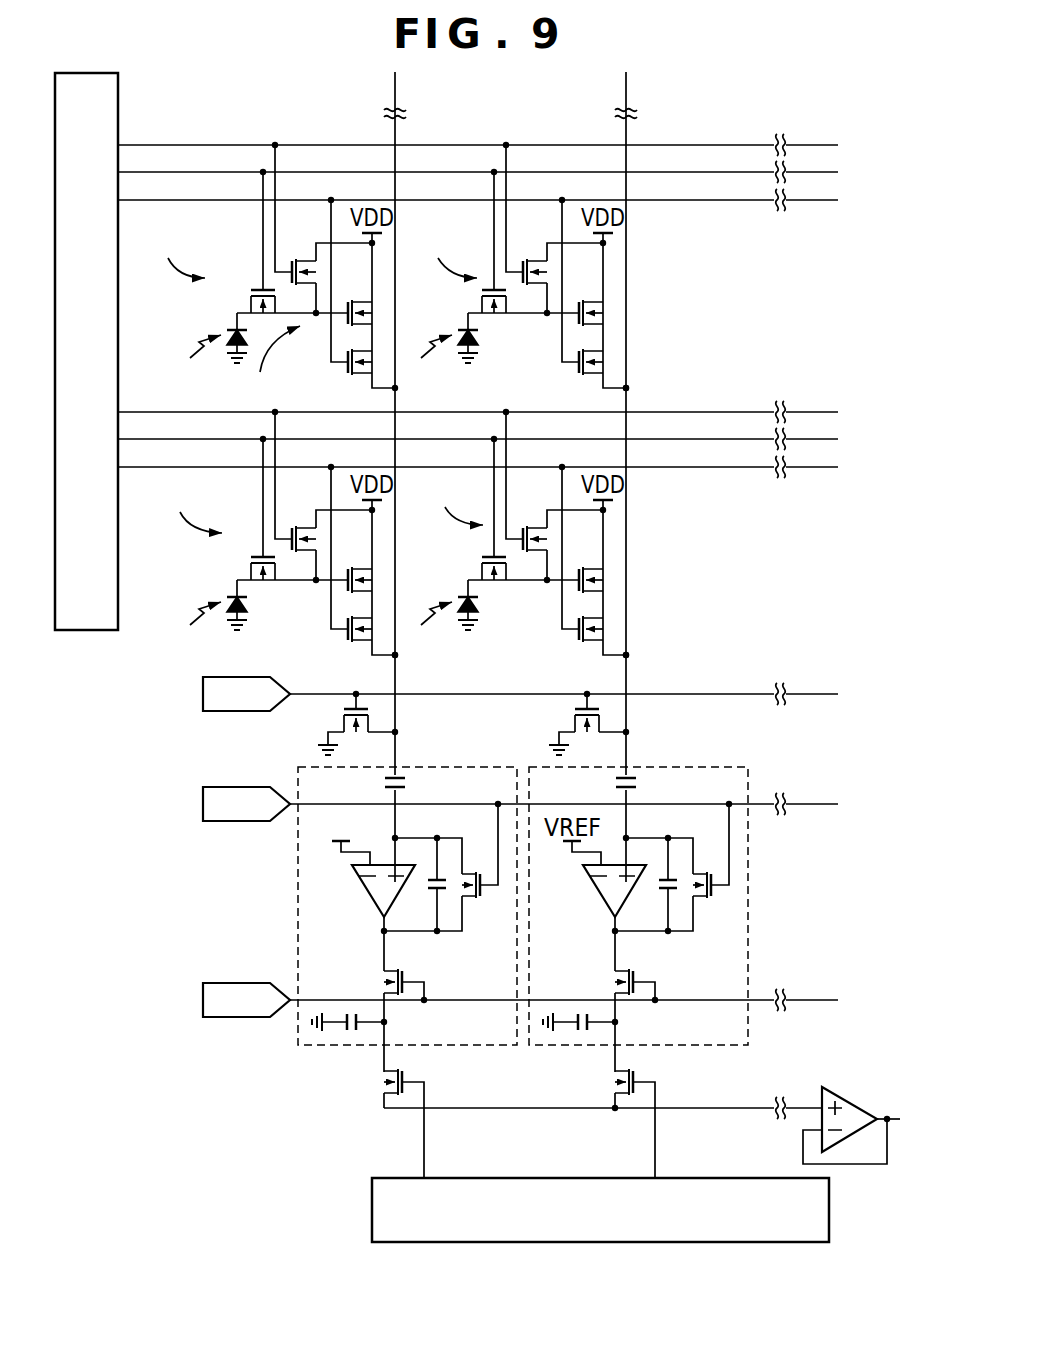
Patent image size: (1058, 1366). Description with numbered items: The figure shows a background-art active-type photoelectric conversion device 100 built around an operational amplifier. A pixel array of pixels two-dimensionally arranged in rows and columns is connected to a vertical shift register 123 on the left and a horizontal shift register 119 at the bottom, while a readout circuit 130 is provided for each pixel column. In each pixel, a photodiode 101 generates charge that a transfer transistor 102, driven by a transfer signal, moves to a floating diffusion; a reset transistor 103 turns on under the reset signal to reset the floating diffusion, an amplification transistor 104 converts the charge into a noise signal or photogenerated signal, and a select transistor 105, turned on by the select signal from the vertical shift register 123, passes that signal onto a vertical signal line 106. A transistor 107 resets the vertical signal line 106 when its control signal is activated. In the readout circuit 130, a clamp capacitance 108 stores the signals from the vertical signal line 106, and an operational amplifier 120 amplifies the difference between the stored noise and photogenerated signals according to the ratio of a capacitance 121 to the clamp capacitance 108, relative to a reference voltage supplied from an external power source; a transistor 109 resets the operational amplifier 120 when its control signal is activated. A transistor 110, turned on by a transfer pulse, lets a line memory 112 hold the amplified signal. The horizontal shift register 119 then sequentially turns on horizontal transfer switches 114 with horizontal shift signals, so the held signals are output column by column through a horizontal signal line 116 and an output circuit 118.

The photoelectric conversion device 100 is at (258, 1246).
The photodiode 101 is at (222, 351).
The transfer transistor 102 is at (262, 287).
The reset transistor 103 is at (307, 253).
The amplification transistor 104 is at (348, 333).
The select transistor 105 is at (345, 367).
The vertical signal line 106 is at (399, 671).
The transistor 107 is at (338, 723).
The clamp capacitance 108 is at (409, 783).
The transistor 109 is at (468, 898).
The transistor 110 is at (380, 978).
The line memory 112 is at (354, 1036).
The horizontal transfer switch 114 is at (383, 1090).
The horizontal signal line 116 is at (388, 1110).
The output circuit 118 is at (867, 1084).
The horizontal shift register 119 is at (372, 1211).
The operational amplifier 120 is at (372, 903).
The capacitance 121 is at (428, 886).
The vertical shift register 123 is at (118, 86).
The readout circuit 130 is at (488, 1047).